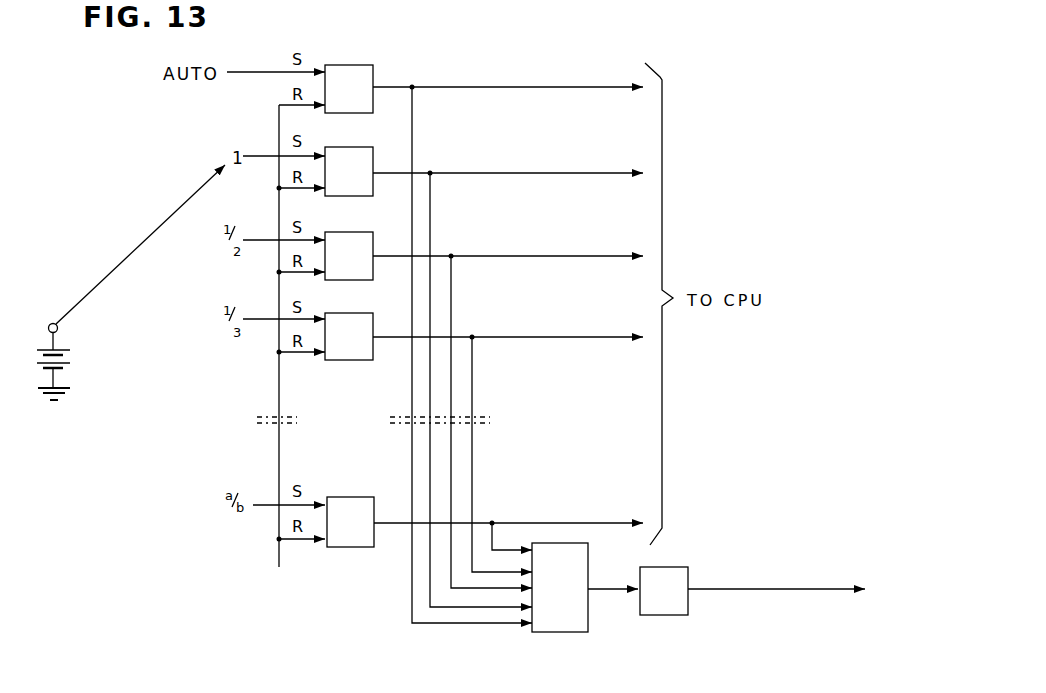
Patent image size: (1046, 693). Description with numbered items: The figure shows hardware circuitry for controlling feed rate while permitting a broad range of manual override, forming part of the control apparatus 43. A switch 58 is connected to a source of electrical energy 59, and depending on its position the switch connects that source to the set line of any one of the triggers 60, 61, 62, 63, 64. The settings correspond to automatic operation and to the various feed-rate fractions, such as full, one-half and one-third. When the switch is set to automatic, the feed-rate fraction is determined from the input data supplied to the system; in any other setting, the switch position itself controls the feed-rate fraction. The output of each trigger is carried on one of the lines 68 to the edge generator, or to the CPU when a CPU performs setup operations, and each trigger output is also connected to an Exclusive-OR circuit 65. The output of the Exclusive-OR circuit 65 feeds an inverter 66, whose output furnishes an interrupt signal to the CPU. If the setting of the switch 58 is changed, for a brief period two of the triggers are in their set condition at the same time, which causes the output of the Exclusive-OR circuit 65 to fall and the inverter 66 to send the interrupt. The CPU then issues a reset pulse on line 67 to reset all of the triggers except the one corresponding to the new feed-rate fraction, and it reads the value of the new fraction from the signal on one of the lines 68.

The keyboard / controller 43 is at (838, 0).
The switch 58 is at (153, 239).
The source of electrical energy 59 is at (65, 350).
The trigger 60 is at (363, 67).
The trigger 61 is at (360, 150).
The trigger 62 is at (358, 235).
The trigger 63 is at (357, 316).
The trigger 64 is at (341, 498).
The Exclusive-OR circuit 65 is at (586, 558).
The inverter 66 is at (678, 568).
The line 67 is at (282, 559).
The lines 68 is at (588, 88).